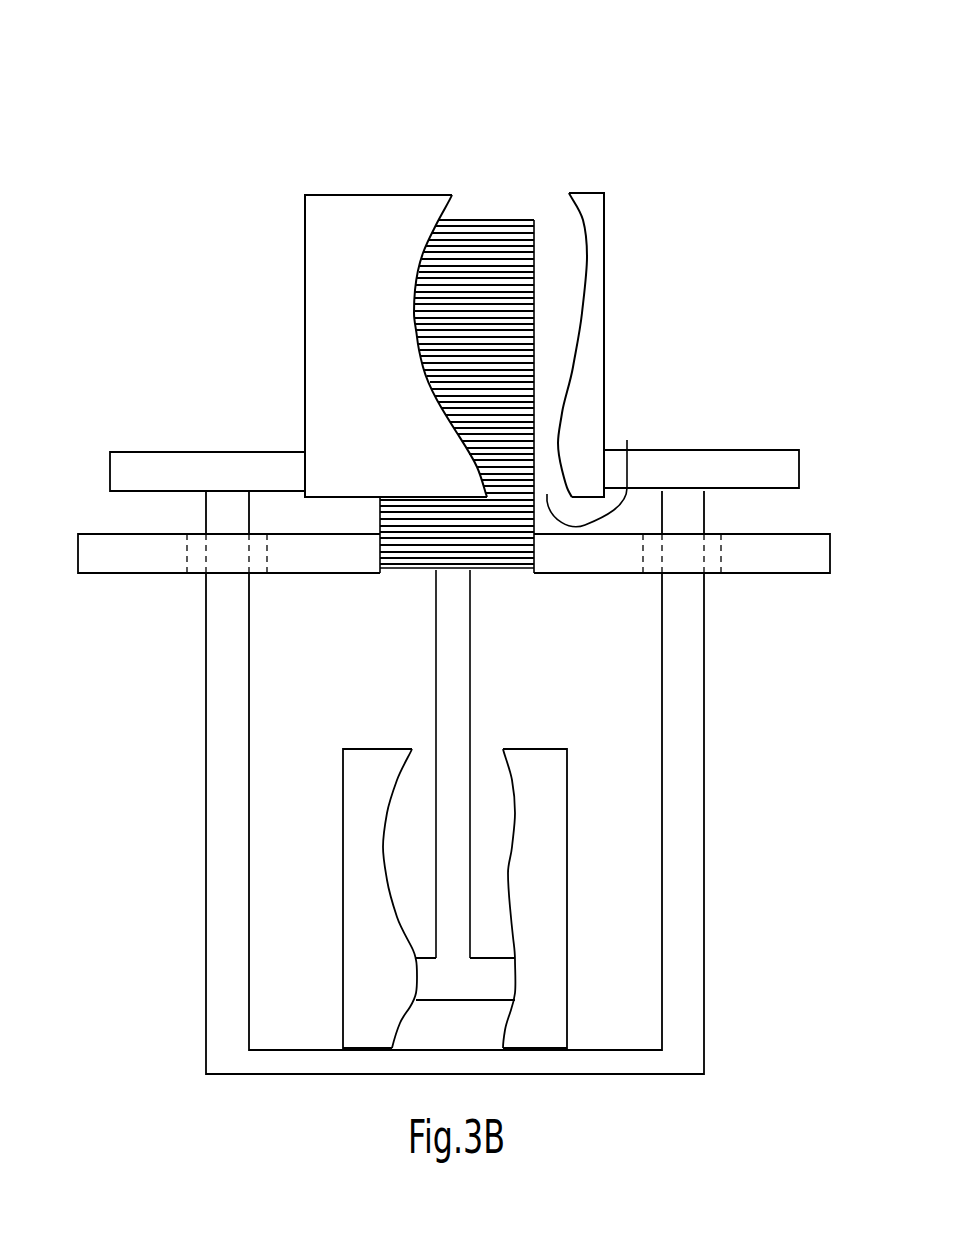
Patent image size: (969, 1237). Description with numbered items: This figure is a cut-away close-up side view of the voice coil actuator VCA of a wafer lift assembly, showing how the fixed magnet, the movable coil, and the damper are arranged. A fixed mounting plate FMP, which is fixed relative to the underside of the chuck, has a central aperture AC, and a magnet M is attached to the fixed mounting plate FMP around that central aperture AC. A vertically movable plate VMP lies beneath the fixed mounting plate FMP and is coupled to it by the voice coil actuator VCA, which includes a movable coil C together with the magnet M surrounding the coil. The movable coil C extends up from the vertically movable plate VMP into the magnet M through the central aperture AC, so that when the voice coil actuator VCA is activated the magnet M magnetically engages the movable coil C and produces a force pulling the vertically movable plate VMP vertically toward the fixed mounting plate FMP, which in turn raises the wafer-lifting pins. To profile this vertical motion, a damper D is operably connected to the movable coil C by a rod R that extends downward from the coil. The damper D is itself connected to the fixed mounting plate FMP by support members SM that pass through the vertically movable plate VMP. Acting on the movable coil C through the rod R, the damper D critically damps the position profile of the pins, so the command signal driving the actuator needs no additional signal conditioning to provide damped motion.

The voice coil actuator VCA is at (266, 256).
The magnet M is at (305, 347).
The movable coil C is at (505, 218).
The central aperture AC is at (627, 440).
The fixed mounting plate FMP is at (797, 468).
The vertically movable plate VMP is at (831, 553).
The rod R is at (470, 688).
The support members SM is at (206, 783).
The damper D is at (567, 898).